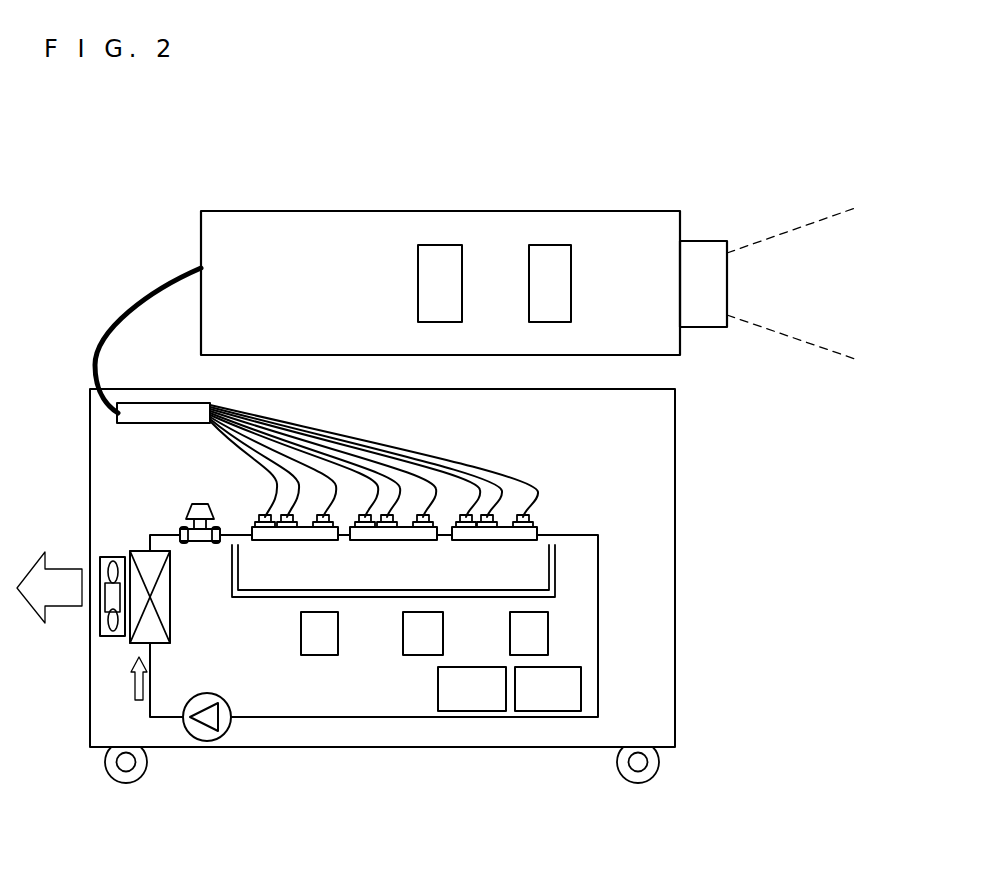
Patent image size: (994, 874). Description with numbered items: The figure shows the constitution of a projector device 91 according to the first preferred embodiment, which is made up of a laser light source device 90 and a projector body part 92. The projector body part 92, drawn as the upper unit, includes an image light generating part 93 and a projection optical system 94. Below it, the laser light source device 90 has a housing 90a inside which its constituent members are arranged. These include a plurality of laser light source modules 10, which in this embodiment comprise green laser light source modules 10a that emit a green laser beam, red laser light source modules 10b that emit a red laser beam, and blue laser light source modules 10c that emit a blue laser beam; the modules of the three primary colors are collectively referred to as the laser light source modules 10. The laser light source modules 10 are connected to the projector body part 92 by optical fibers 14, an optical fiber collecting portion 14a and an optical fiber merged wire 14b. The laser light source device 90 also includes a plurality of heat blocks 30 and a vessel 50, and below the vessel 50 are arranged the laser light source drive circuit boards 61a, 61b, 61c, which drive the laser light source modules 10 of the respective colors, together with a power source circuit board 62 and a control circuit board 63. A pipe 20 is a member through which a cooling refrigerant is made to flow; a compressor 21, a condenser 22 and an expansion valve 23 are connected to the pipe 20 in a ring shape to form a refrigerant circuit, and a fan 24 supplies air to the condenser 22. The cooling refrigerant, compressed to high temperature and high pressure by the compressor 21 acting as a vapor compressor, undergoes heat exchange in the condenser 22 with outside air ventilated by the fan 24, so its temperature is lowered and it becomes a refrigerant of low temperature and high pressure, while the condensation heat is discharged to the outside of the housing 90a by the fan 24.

The projector device 91 is at (108, 125).
The projector body part 92 is at (300, 211).
The image light generating part 93 is at (440, 245).
The projection optical system 94 is at (550, 245).
The laser light source device 90 is at (733, 509).
The housing 90a is at (675, 693).
The optical fibers 14 is at (507, 462).
The optical fiber collecting portion 14a is at (117, 416).
The optical fiber merged wire 14b is at (135, 296).
The laser light source modules 10 is at (402, 490).
The green laser light source modules 10a is at (258, 517).
The red laser light source modules 10b is at (362, 517).
The blue laser light source modules 10c is at (531, 517).
The heat blocks 30 is at (318, 540).
The vessel 50 is at (555, 556).
The pipe 20 is at (152, 535).
The compressor 21 is at (188, 740).
The condenser 22 is at (140, 648).
The expansion valve 23 is at (196, 505).
The fan 24 is at (100, 617).
The laser light source drive circuit board 61a is at (316, 655).
The laser light source drive circuit board 61b is at (412, 655).
The laser light source drive circuit board 61c is at (548, 622).
The power source circuit board 62 is at (562, 711).
The control circuit board 63 is at (488, 711).